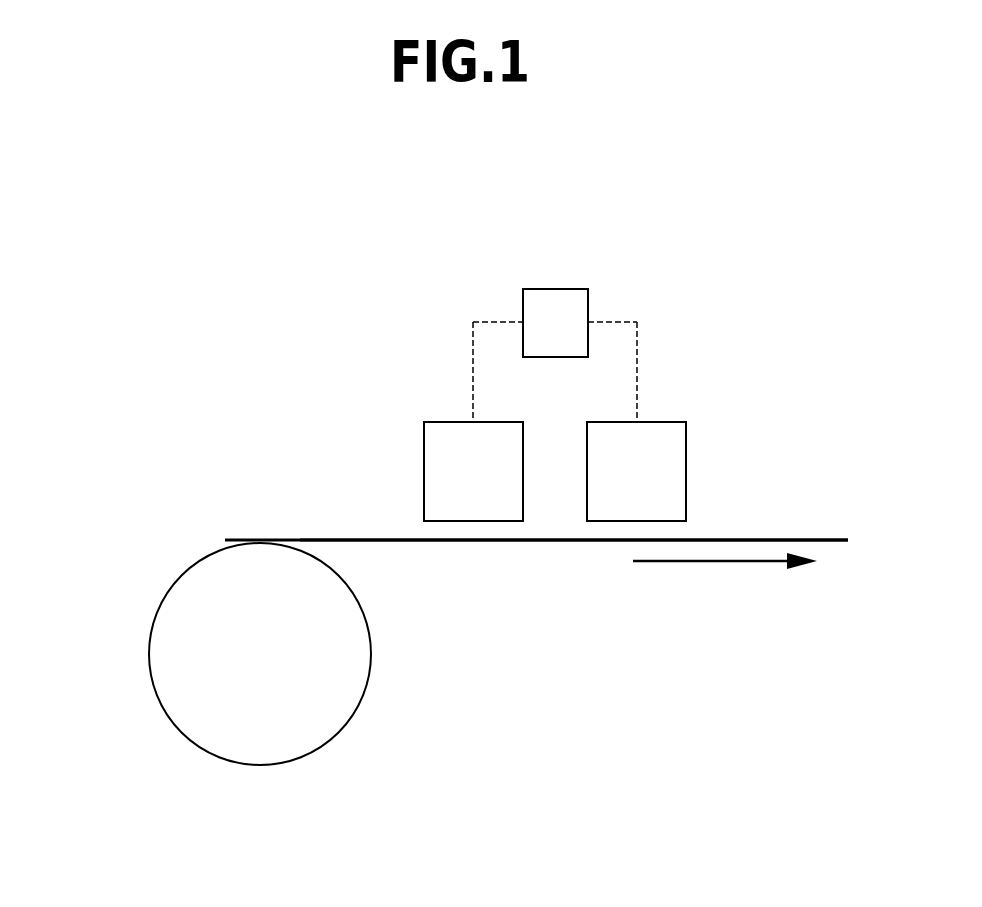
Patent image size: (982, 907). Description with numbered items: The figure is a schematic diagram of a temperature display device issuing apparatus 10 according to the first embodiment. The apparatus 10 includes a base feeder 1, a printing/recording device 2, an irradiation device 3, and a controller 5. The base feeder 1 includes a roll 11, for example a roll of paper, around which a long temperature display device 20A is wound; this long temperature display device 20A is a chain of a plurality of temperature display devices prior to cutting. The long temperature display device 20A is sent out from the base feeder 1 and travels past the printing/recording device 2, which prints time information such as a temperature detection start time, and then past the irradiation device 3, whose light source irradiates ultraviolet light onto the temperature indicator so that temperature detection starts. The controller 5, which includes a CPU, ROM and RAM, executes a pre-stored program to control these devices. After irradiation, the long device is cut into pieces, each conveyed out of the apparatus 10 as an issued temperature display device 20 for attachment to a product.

The base feeder 1 is at (214, 642).
The roll 11 is at (150, 651).
The printing/recording device 2 is at (424, 424).
The irradiation device 3 is at (686, 430).
The controller 5 is at (588, 303).
The temperature display device issuing apparatus 10 is at (770, 344).
The temperature display device 20 is at (536, 518).
The long temperature display device 20A is at (380, 540).